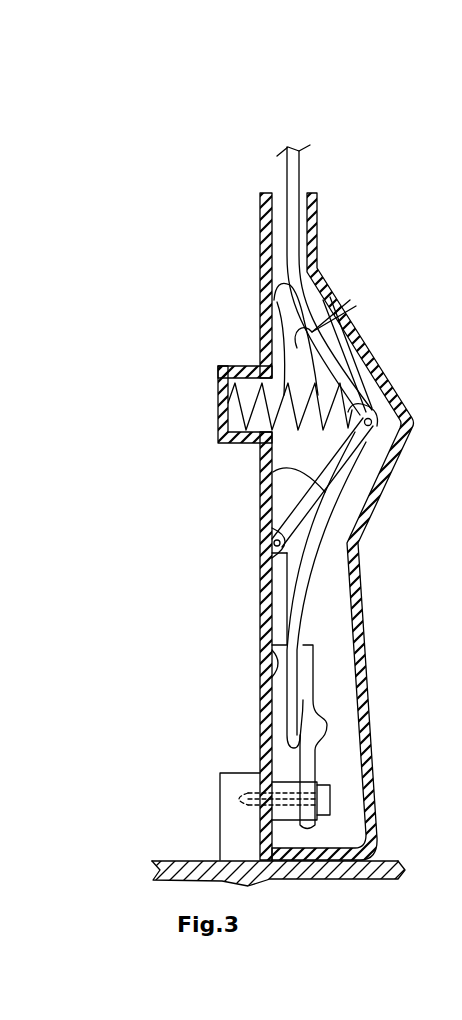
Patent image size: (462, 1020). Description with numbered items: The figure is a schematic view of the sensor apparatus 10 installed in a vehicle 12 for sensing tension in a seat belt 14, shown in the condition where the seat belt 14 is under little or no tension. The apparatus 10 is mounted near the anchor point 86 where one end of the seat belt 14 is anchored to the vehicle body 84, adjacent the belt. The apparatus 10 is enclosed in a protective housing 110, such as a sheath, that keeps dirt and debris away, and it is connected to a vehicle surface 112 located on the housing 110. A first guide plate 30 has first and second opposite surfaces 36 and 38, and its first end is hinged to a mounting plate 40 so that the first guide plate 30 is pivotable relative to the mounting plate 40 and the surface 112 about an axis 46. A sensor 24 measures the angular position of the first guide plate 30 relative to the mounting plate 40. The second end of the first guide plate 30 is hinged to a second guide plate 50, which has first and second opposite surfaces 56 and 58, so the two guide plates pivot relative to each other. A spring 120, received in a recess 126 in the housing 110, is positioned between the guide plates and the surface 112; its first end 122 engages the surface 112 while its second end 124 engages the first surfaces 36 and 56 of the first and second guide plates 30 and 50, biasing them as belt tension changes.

The sensor apparatus 10 is at (190, 343).
The vehicle 12 is at (266, 872).
The seat belt 14 is at (300, 168).
The sensor 24 is at (271, 553).
The first guide plate 30 is at (307, 492).
The first surface of the first guide plate 36 is at (271, 478).
The second surface of the first guide plate 38 is at (325, 493).
The mounting plate 40 is at (278, 600).
The axis 46 is at (270, 540).
The second guide plate 50 is at (290, 305).
The first surface of the second guide plate 56 is at (293, 325).
The second surface of the second guide plate 58 is at (327, 345).
The vehicle body 84 is at (240, 840).
The anchor point 86 is at (290, 788).
The protective housing 110 is at (366, 662).
The vehicle surface 112 is at (270, 680).
The spring 120 is at (266, 297).
The first end of the spring 122 is at (218, 399).
The second end of the spring 124 is at (347, 410).
The recess 126 is at (243, 367).